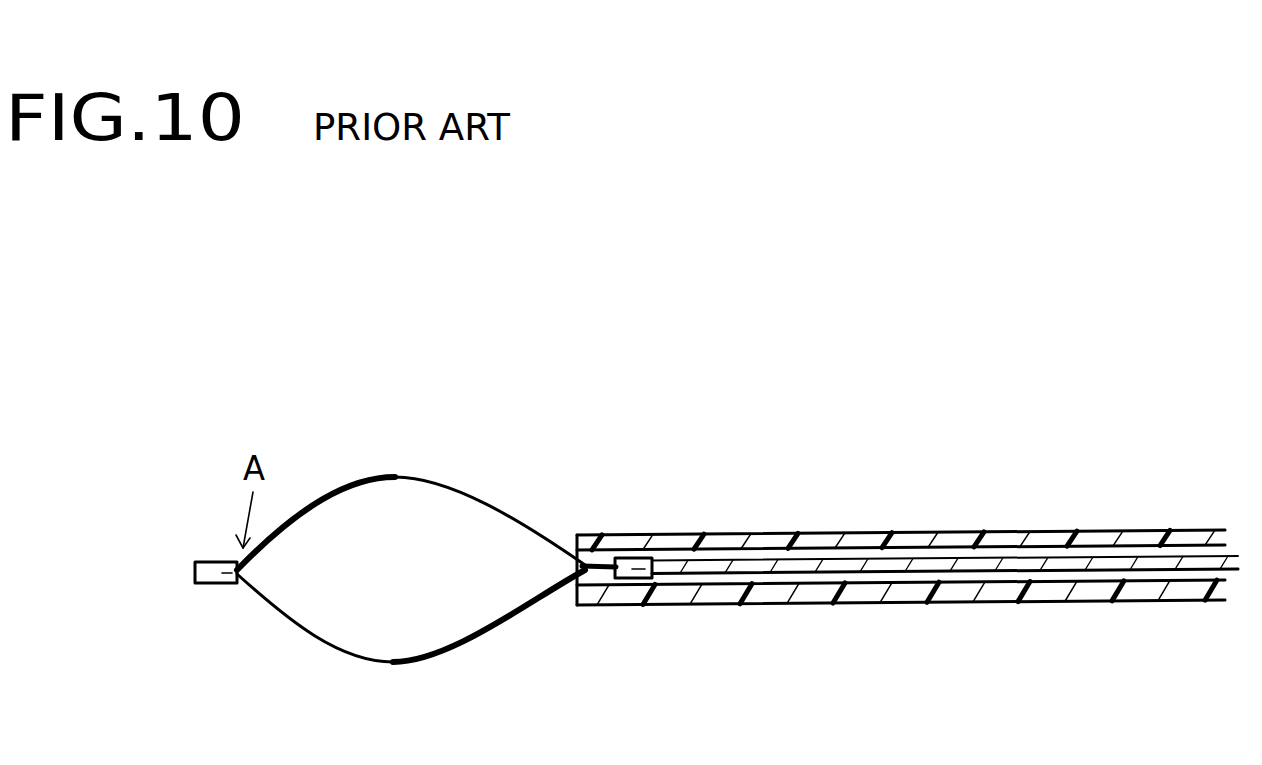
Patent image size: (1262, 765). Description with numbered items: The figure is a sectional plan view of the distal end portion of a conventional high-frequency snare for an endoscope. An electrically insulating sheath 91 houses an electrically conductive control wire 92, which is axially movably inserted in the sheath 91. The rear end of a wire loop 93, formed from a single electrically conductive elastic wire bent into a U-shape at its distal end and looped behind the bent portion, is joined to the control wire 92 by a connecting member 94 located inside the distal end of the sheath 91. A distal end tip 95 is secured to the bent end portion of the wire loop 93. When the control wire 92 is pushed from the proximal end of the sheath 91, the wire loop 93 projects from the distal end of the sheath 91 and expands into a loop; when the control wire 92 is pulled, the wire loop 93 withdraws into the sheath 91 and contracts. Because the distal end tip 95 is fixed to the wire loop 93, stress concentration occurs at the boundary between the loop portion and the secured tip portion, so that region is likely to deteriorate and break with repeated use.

The sheath 91 is at (1003, 531).
The control wire 92 is at (1137, 560).
The wire loop 93 is at (425, 480).
The connector box 94 is at (625, 575).
The distal end tip 95 is at (212, 583).